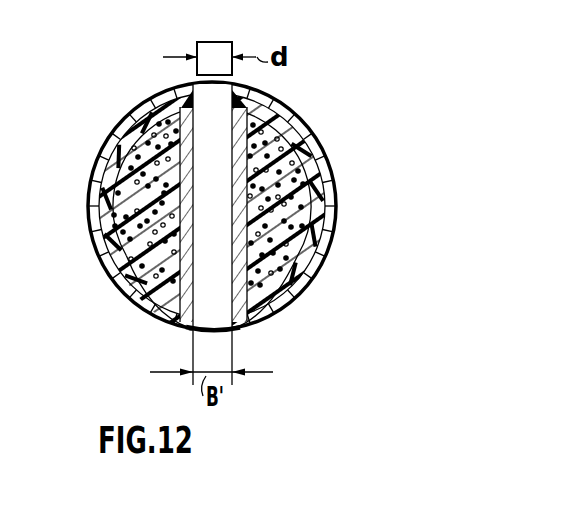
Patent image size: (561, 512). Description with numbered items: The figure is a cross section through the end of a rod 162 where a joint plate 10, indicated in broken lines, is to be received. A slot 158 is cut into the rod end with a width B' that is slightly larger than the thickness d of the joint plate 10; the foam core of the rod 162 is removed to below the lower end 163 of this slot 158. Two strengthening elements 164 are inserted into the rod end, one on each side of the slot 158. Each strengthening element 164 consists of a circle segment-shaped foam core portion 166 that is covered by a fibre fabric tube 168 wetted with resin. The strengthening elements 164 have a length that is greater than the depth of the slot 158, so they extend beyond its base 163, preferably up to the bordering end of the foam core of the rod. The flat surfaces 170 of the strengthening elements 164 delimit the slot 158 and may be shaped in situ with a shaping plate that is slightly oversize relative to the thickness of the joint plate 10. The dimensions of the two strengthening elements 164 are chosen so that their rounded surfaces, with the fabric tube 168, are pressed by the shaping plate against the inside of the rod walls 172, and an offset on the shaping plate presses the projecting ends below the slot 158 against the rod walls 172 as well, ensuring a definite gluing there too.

The joint plate 10 is at (213, 44).
The slot 158 is at (218, 143).
The rod 162 is at (78, 224).
The lower end of the slot 163 is at (195, 81).
The strengthening elements 164 is at (143, 157).
The circle segment-shaped foam core portions 166 is at (142, 266).
The fibre fabric tube 168 is at (315, 212).
The flat surfaces 170 is at (192, 331).
The rod walls 172 is at (318, 252).